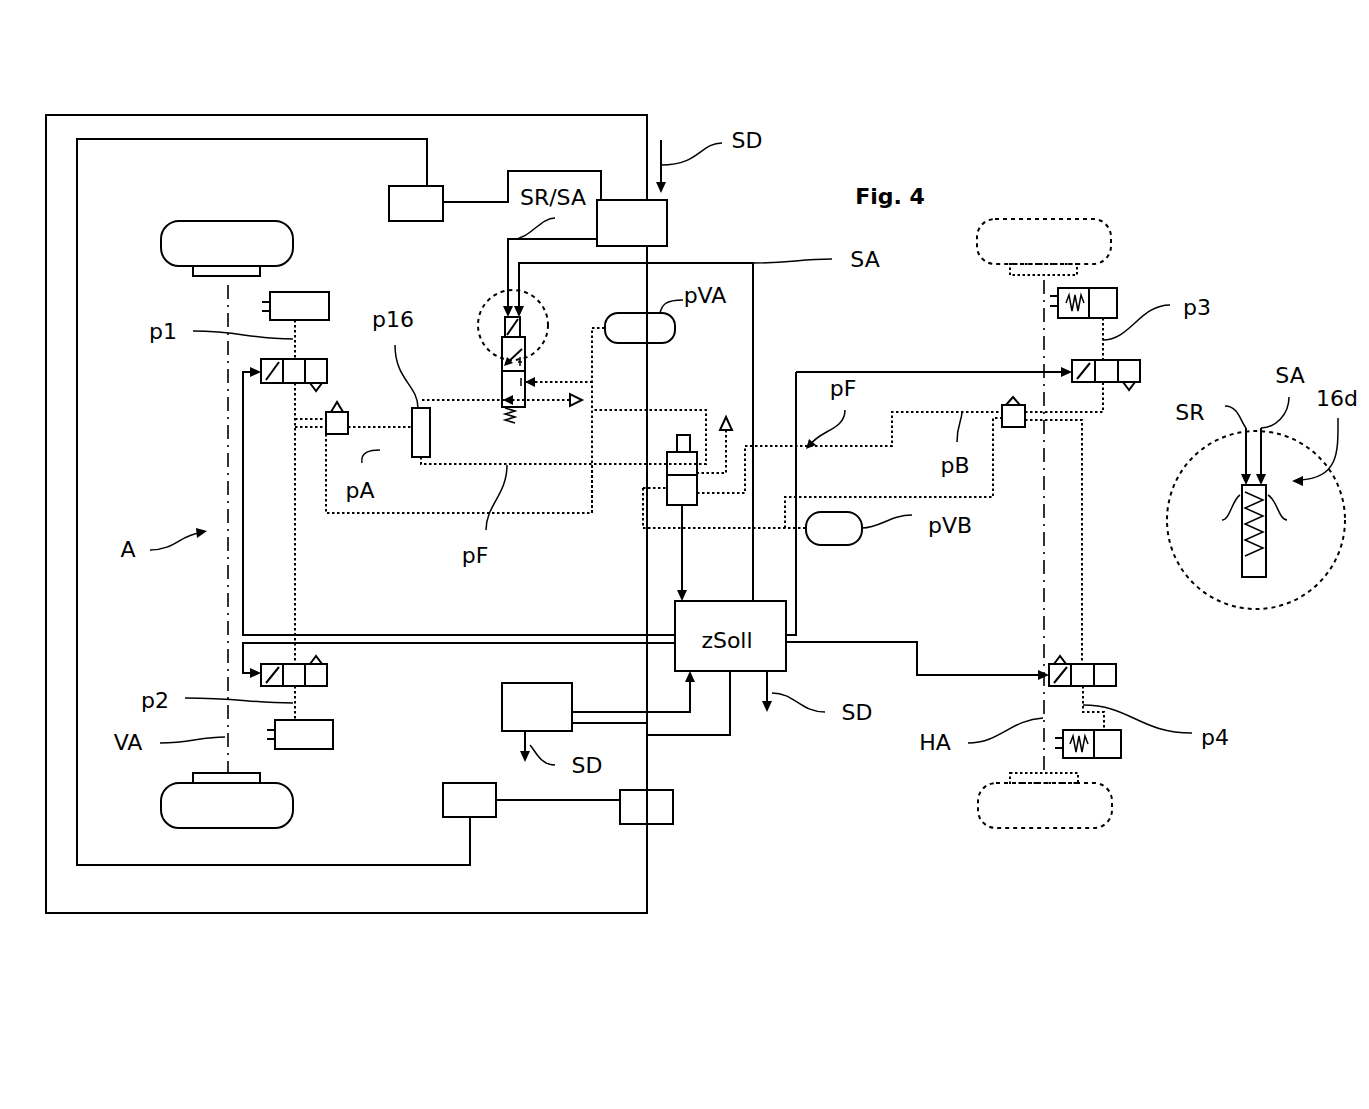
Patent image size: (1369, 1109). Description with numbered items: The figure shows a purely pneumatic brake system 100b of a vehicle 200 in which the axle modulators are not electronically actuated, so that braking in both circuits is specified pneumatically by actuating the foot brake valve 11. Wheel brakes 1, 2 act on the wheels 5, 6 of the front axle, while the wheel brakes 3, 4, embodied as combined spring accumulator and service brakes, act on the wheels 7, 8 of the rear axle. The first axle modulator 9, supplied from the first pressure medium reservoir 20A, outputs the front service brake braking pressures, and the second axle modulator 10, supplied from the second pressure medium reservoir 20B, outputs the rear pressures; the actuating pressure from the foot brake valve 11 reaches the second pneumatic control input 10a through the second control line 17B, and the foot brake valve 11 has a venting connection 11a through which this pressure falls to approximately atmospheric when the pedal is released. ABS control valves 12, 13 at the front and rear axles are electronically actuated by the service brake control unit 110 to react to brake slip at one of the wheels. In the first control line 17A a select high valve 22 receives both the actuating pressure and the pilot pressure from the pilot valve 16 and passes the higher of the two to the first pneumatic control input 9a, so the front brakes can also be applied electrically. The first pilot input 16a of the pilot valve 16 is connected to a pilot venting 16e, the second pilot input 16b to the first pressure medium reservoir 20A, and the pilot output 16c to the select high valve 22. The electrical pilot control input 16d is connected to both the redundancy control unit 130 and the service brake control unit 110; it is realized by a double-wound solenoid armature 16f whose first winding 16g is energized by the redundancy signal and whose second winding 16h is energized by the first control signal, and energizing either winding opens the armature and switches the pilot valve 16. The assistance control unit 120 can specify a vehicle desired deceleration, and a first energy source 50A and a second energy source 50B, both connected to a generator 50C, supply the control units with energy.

The wheel brake 1 is at (295, 292).
The wheel brake 2 is at (333, 737).
The wheel brake 3 is at (1117, 303).
The wheel brake 4 is at (1121, 745).
The wheel 5 is at (228, 221).
The wheel 6 is at (293, 805).
The wheel 7 is at (1045, 219).
The wheel 8 is at (1045, 828).
The first axle modulator 9 is at (340, 410).
The first pneumatic control input 9a is at (348, 426).
The second axle modulator 10 is at (1025, 422).
The second pneumatic control input 10a is at (1002, 410).
The foot brake valve 11 is at (680, 435).
The venting connection 11a is at (726, 412).
The ABS control valve 12 is at (261, 362).
The ABS control valve 13 is at (261, 680).
The pilot valve 16 is at (512, 418).
The first pilot input 16a is at (527, 400).
The second pilot input 16b is at (532, 380).
The pilot output 16c is at (503, 400).
The pilot control input 16d is at (508, 297).
The pilot venting 16e is at (600, 397).
The solenoid armature 16f is at (1253, 577).
The first winding 16g is at (1203, 515).
The second winding 16h is at (1305, 515).
The first control line 17A is at (582, 465).
The second control line 17B is at (910, 412).
The first pressure medium reservoir 20A is at (640, 328).
The second pressure medium reservoir 20B is at (834, 528).
The select high valve 22 is at (420, 457).
The first energy source 50A is at (673, 807).
The second energy source 50B is at (443, 202).
The generator 50C is at (483, 817).
The purely pneumatic brake system 100b is at (805, 848).
The service brake control unit 110 is at (757, 671).
The assistance control unit 120 is at (616, 792).
The redundancy control unit 130 is at (632, 223).
The vehicle 200 is at (883, 832).